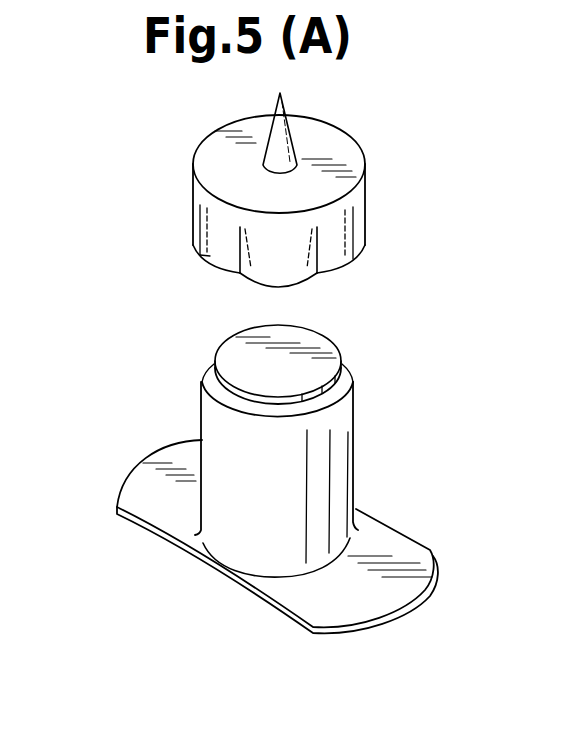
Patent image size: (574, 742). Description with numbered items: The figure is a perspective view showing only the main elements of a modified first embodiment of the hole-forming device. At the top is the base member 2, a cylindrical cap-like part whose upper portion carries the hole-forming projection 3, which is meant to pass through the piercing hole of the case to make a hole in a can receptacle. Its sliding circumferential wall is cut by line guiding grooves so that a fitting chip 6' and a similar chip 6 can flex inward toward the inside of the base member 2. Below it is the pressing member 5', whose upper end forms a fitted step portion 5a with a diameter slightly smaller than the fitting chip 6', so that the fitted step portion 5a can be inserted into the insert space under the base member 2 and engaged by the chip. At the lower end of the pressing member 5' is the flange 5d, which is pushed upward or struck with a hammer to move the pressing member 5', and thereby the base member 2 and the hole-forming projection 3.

The base member 2 is at (369, 147).
The hole-forming projection 3 is at (284, 103).
The engaging tab 6 is at (242, 271).
The fitting chip 6' is at (355, 265).
The fitted step portion 5a is at (345, 378).
The pressing member 5' is at (307, 470).
The flange 5d is at (396, 553).